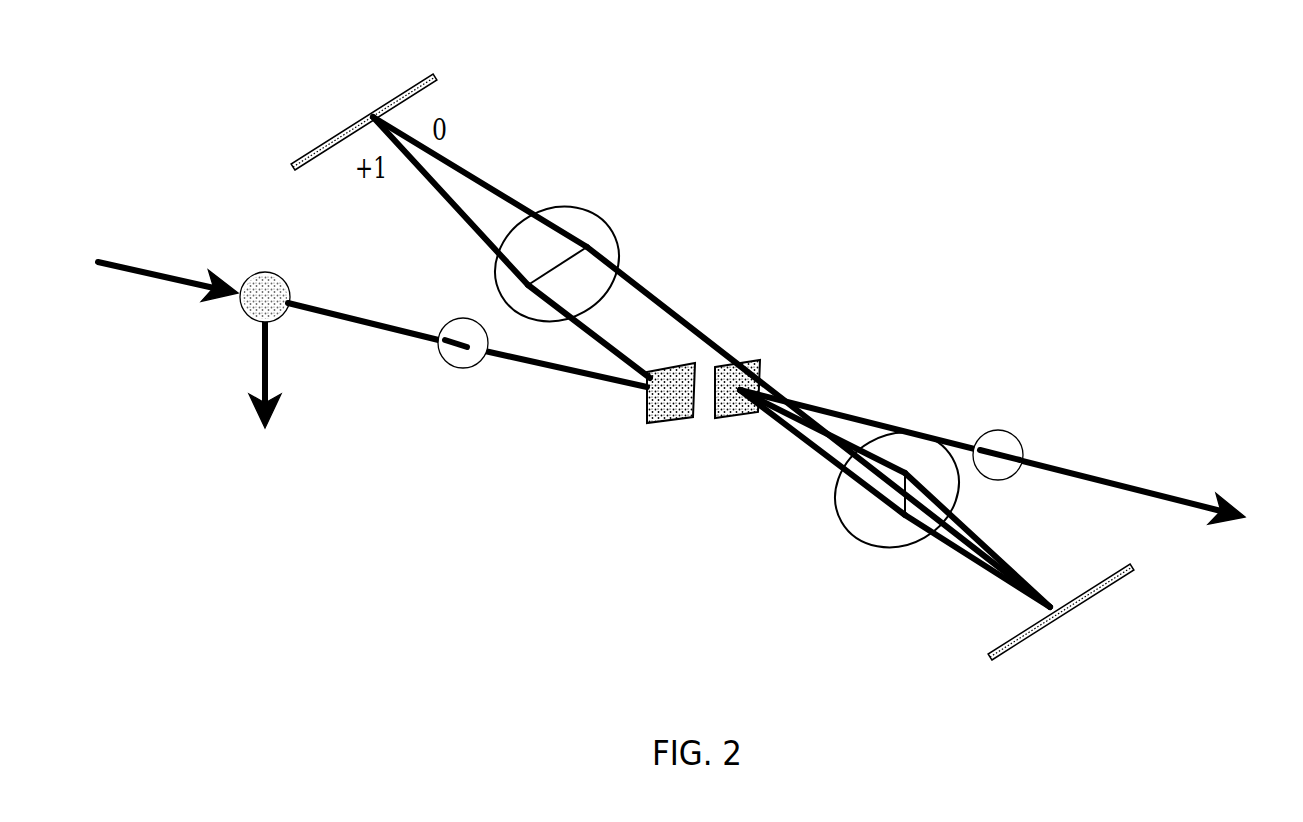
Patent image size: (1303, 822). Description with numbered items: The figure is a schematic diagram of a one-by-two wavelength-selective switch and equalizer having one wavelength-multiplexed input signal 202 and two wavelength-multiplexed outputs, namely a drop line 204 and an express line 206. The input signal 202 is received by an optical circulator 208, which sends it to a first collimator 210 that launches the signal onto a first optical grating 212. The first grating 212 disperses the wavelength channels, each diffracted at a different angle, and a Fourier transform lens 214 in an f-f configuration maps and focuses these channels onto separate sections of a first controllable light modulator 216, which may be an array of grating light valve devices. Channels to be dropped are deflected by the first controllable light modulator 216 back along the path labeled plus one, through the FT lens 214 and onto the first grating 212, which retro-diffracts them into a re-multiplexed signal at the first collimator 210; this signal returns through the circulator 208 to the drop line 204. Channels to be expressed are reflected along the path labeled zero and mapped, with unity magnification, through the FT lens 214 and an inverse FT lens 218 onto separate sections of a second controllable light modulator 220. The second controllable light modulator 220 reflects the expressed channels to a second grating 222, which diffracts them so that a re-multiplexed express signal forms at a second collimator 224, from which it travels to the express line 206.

The input signal 202 is at (168, 243).
The drop line 204 is at (268, 413).
The express line 206 is at (997, 457).
The optical circulator 208 is at (282, 278).
The first collimator 210 is at (471, 380).
The first optical grating 212 is at (657, 427).
The Fourier transform lens 214 is at (561, 240).
The first controllable light modulator 216 is at (334, 90).
The inverse FT lens 218 is at (897, 526).
The second controllable light modulator 220 is at (1120, 625).
The second grating 222 is at (797, 358).
The second collimator 224 is at (1030, 416).